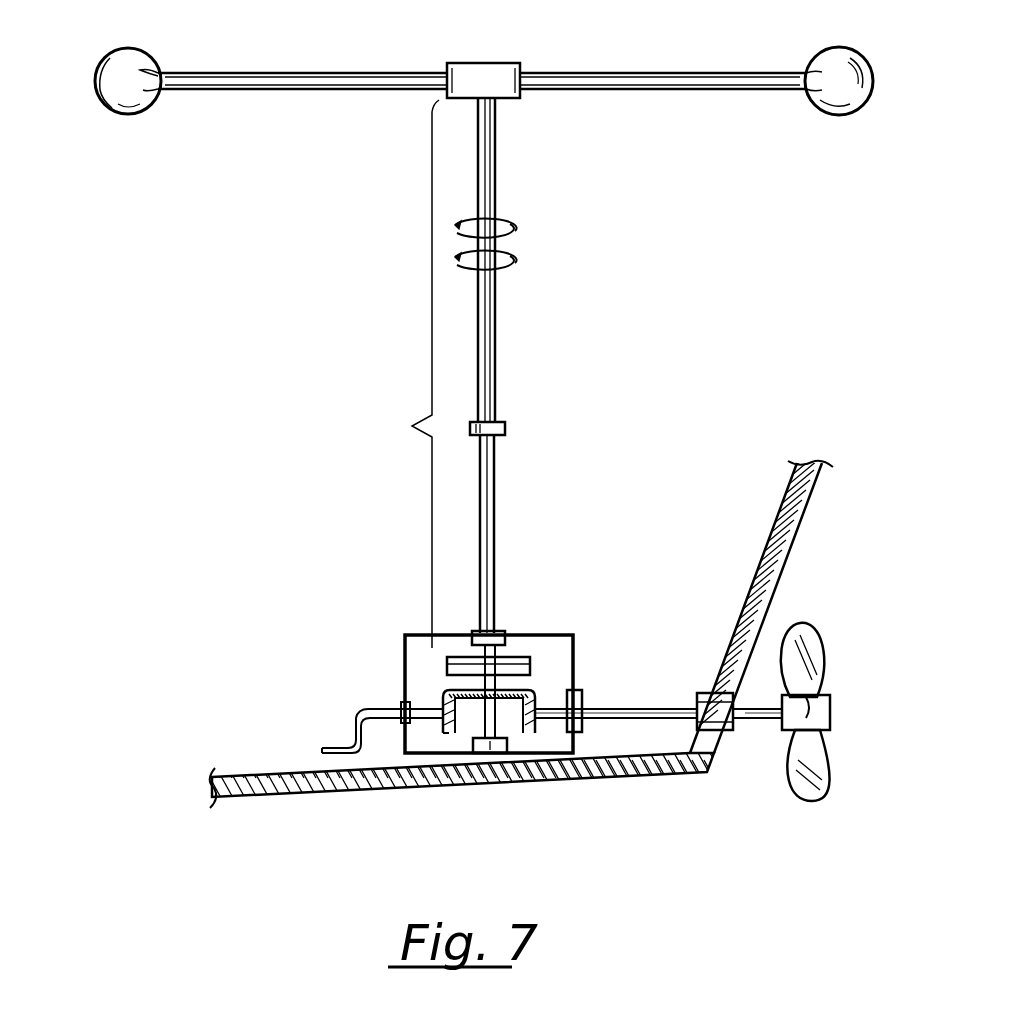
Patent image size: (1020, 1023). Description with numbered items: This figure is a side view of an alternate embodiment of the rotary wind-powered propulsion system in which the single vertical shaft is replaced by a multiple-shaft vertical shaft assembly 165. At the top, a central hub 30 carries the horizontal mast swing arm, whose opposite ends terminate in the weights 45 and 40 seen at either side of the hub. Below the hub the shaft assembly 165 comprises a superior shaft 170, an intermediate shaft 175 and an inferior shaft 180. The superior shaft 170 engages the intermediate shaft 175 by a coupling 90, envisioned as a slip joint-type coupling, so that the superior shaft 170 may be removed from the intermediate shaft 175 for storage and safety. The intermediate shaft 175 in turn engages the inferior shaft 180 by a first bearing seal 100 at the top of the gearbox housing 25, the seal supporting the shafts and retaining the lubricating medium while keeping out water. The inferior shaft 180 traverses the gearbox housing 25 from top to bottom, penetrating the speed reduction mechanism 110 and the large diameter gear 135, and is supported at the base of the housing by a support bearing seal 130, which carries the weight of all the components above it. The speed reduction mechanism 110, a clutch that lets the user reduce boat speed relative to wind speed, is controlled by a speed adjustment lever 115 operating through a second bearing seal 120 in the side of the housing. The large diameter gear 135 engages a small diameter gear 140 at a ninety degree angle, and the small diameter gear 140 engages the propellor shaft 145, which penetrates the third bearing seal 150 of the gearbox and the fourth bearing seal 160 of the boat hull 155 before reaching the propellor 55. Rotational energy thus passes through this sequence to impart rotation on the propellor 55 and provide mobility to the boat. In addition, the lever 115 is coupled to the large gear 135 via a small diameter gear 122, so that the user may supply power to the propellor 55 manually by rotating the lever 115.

The weight ball 45 is at (113, 50).
The central hub 30 is at (517, 63).
The weight ball 40 is at (678, 72).
The superior shaft 170 is at (493, 373).
The coupling 90 is at (507, 422).
The vertical shaft assembly 165 is at (402, 374).
The intermediate shaft 175 is at (497, 505).
The first bearing seal 100 is at (503, 633).
The inferior shaft 180 is at (537, 647).
The speed reduction mechanism 110 is at (530, 657).
The gearbox housing 25 is at (578, 662).
The propellor shaft 145 is at (632, 707).
The boat hull 155 is at (775, 597).
The speed adjustment lever 115 is at (360, 712).
The second bearing seal 120 is at (400, 717).
The small diameter gear 122 is at (446, 733).
The support bearing seal 130 is at (485, 745).
The large diameter gear 135 is at (512, 720).
The small diameter gear 140 is at (512, 698).
The third bearing seal 150 is at (588, 730).
The fourth bearing seal 160 is at (725, 730).
The propellor 55 is at (813, 780).